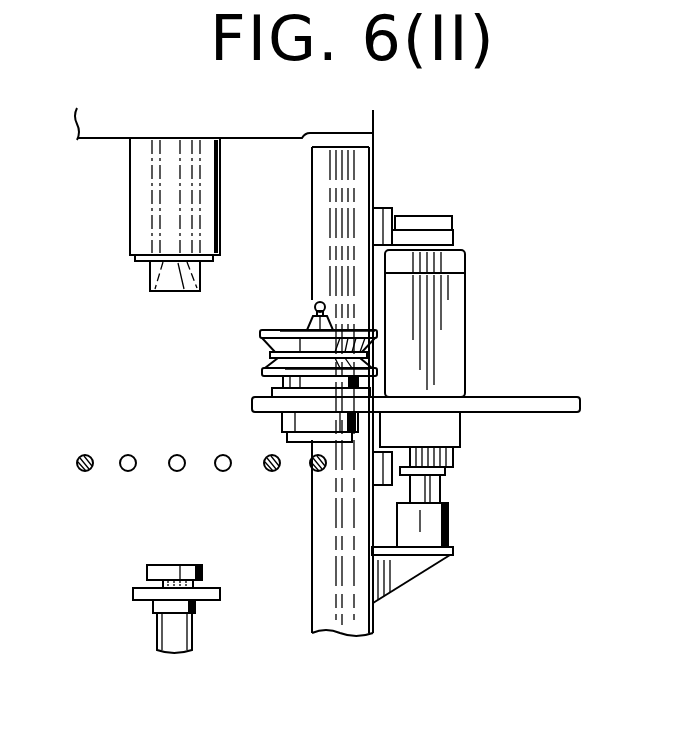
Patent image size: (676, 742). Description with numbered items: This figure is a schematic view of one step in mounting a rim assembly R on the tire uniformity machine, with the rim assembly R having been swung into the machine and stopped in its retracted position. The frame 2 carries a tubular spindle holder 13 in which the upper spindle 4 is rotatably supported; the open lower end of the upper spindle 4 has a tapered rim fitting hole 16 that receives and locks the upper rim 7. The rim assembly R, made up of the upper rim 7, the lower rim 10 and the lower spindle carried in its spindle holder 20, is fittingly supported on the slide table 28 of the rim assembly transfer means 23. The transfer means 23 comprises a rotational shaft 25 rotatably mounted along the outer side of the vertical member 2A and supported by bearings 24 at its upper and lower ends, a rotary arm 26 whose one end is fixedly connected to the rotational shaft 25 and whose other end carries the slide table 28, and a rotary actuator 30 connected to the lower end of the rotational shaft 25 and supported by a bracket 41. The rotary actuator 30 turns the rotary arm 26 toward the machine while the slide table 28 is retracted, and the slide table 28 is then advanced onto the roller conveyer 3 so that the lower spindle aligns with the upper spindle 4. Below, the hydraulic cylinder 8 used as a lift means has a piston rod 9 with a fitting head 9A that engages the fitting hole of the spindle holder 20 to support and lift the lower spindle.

The frame 2 is at (92, 123).
The vertical member 2A is at (320, 600).
The spindle holder 13 is at (160, 237).
The upper spindle 4 is at (200, 208).
The rim fitting hole 16 is at (183, 293).
The rim assembly R is at (297, 323).
The upper rim 7 is at (268, 332).
The lower rim 10 is at (272, 362).
The spindle holder 20 is at (307, 420).
The slide table 28 is at (252, 403).
The roller conveyer 3 is at (121, 470).
The bearings 24 is at (452, 238).
The rim assembly transfer means 23 is at (478, 366).
The rotary arm 26 is at (455, 415).
The rotational shaft 25 is at (455, 455).
The rotary actuator 30 is at (450, 532).
The bracket 41 is at (405, 565).
The fitting head 9A is at (180, 565).
The piston rod 9 is at (187, 578).
The hydraulic cylinder 8 is at (178, 636).